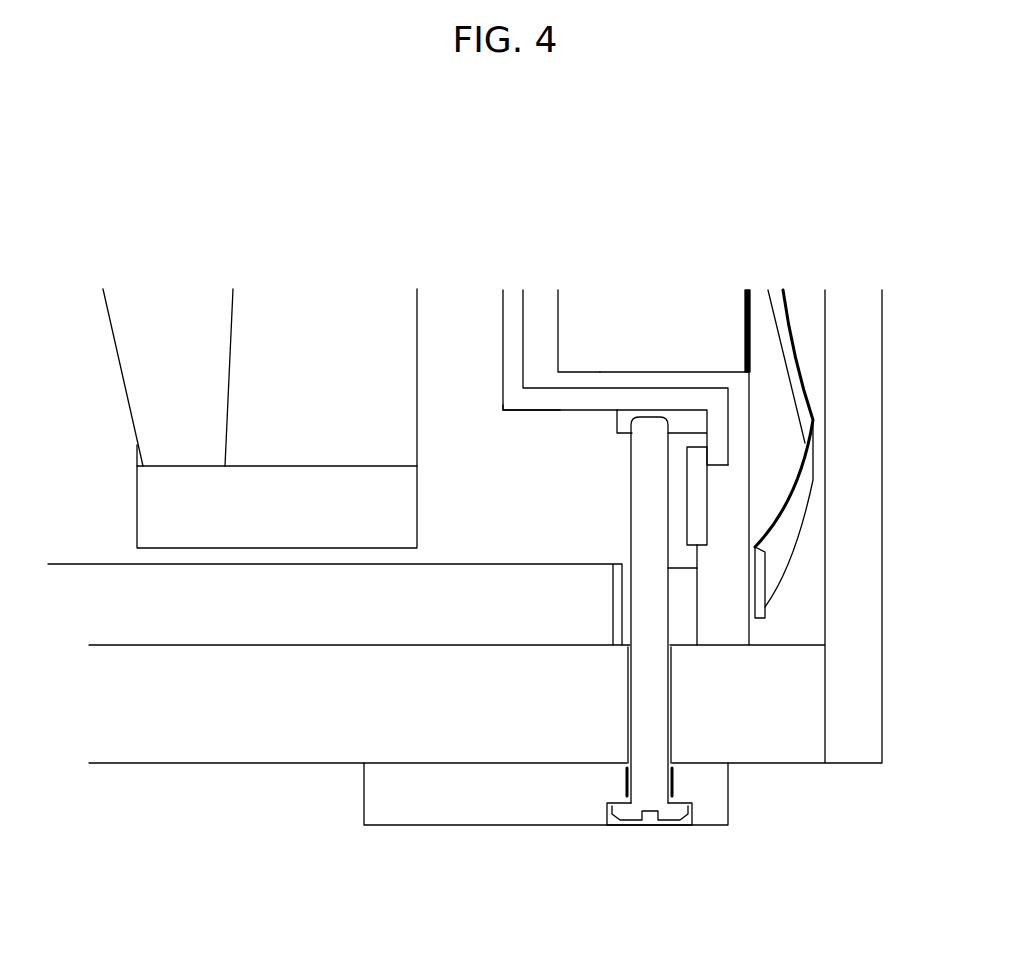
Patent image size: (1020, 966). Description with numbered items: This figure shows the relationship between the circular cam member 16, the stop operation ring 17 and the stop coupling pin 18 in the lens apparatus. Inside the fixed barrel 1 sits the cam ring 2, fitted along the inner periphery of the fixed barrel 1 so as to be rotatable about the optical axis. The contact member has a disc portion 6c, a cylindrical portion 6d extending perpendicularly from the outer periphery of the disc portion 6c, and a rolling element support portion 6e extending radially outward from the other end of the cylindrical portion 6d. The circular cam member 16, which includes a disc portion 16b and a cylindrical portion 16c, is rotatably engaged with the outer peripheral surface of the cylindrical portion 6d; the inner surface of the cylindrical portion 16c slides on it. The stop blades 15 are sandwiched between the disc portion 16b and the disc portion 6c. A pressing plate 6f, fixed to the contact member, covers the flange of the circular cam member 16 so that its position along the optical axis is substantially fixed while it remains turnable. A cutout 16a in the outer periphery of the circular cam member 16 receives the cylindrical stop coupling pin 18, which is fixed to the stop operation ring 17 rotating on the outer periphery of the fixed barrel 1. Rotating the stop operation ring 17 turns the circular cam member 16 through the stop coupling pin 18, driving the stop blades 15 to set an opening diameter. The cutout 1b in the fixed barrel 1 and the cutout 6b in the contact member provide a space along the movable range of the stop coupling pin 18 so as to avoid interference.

The fixed barrel 1 is at (762, 732).
The cutout 1b is at (628, 738).
The cam ring 2 is at (447, 590).
The cutout 6b is at (683, 622).
The disc portion 6c is at (550, 303).
The cylindrical portion 6d is at (627, 382).
The rolling element support portion 6e is at (737, 497).
The pressing plate 6f is at (697, 485).
The stop blades 15 is at (530, 300).
The circular cam member 16 is at (716, 407).
The cutout 16a is at (692, 423).
The disc portion 16b is at (513, 300).
The cylindrical portion 16c is at (540, 402).
The stop operation ring 17 is at (708, 803).
The stop coupling pin 18 is at (652, 790).